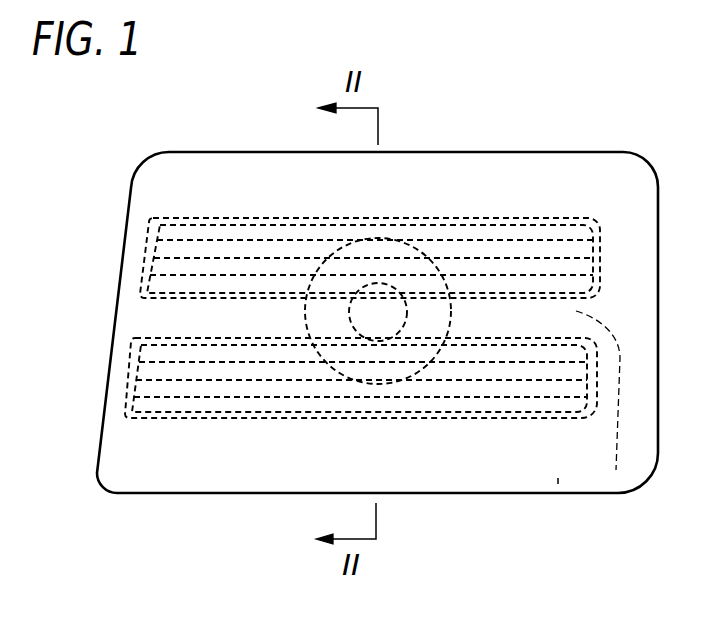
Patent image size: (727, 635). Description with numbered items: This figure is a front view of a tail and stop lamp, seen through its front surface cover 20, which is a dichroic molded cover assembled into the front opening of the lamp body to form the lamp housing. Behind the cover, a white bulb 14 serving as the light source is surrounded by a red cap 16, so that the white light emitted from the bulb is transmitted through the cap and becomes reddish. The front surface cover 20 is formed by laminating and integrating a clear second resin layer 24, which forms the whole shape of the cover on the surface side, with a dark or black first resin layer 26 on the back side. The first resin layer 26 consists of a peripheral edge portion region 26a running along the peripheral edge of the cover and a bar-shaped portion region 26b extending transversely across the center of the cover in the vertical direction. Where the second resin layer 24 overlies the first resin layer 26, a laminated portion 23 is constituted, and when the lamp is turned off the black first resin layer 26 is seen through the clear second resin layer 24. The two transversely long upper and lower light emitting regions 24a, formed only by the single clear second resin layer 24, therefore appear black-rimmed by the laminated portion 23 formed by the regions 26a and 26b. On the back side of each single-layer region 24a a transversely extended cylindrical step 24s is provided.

The front surface cover 20 is at (296, 138).
The second resin layer 24 is at (338, 325).
The region of the second resin layer to be a single layer 24a is at (233, 204).
The cylindrical step 24s is at (535, 245).
The white bulb 14 is at (378, 285).
The red cap 16 is at (426, 246).
The first resin layer 26 is at (589, 457).
The peripheral edge portion region 26a is at (558, 480).
The bar-shaped portion region 26b is at (616, 470).
The laminated portion 23 is at (589, 457).